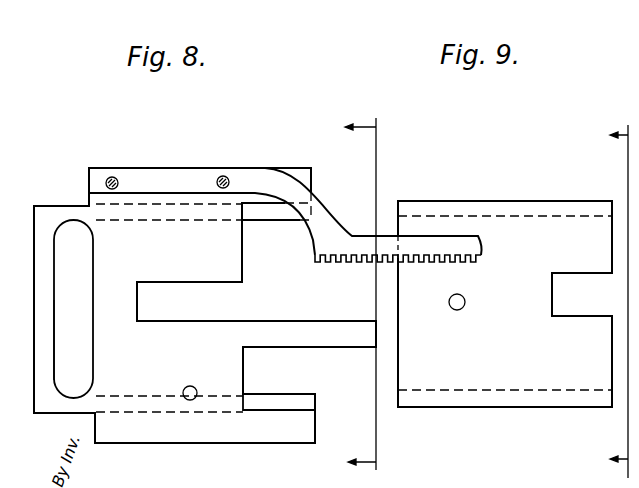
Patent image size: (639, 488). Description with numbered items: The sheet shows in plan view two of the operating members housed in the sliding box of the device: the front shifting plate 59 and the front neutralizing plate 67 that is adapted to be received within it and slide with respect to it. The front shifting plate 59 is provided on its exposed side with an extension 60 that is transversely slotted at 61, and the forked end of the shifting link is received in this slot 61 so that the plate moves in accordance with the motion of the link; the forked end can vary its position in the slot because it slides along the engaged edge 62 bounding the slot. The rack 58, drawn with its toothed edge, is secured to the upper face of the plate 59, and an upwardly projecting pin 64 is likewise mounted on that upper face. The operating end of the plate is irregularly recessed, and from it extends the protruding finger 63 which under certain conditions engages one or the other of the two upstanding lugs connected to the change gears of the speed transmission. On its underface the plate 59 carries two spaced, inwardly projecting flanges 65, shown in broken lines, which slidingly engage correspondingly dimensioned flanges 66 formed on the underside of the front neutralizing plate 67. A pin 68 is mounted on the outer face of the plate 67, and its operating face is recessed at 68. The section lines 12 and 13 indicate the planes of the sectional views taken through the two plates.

In FIG. 8, the section line 12- 12 is at (343, 296).
In FIG. 9, the section line 13- 13 is at (603, 301).
In FIG. 8, the rack 58 is at (337, 243).
In FIG. 8, the front shifting plate 59 is at (184, 252).
In FIG. 8, the extension 60 is at (55, 405).
In FIG. 8, the slot 61 is at (73, 309).
In FIG. 8, the engaged edge 62 is at (43, 325).
In FIG. 8, the protruding finger 63 is at (347, 330).
In FIG. 8, the upwardly projecting pin 64 is at (194, 386).
In FIG. 8, the inwardly projecting flanges 65 is at (265, 212).
In FIG. 9, the flanges 66 is at (514, 205).
In FIG. 9, the front neutralizing plate 67 is at (505, 304).
In FIG. 9, the pin and recess 68 is at (464, 297).